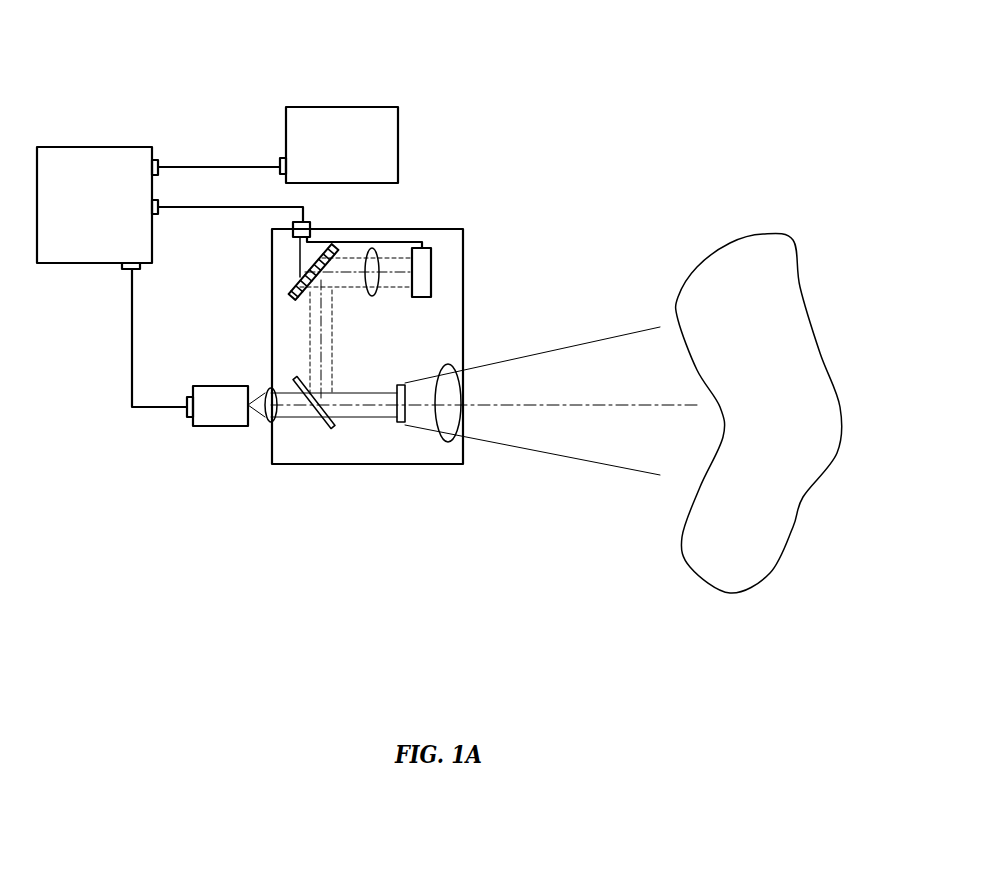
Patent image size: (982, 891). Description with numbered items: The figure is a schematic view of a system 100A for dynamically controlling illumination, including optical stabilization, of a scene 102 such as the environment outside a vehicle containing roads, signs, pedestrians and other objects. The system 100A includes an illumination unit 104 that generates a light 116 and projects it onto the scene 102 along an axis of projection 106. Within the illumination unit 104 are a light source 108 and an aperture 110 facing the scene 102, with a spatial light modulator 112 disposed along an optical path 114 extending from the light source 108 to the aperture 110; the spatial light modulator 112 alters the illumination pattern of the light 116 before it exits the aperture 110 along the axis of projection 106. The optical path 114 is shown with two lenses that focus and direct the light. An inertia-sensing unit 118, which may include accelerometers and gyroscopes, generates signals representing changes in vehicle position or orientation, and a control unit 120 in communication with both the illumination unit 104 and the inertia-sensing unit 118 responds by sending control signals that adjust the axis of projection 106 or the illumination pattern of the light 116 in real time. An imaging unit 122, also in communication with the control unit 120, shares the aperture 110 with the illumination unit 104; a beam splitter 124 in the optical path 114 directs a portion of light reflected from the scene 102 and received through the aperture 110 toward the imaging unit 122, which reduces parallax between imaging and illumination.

The system 100A is at (488, 68).
The scene 102 is at (787, 413).
The illumination unit 104 is at (465, 270).
The axis of projection 106 is at (538, 407).
The light source 108 is at (431, 258).
The aperture 110 is at (459, 392).
The spatial light modulator 112 is at (292, 297).
The optical path 114 is at (322, 328).
The light 116 is at (332, 360).
The inertia-sensing unit 118 is at (296, 107).
The control unit 120 is at (70, 264).
The imaging unit 122 is at (213, 427).
The beam splitter 124 is at (313, 427).